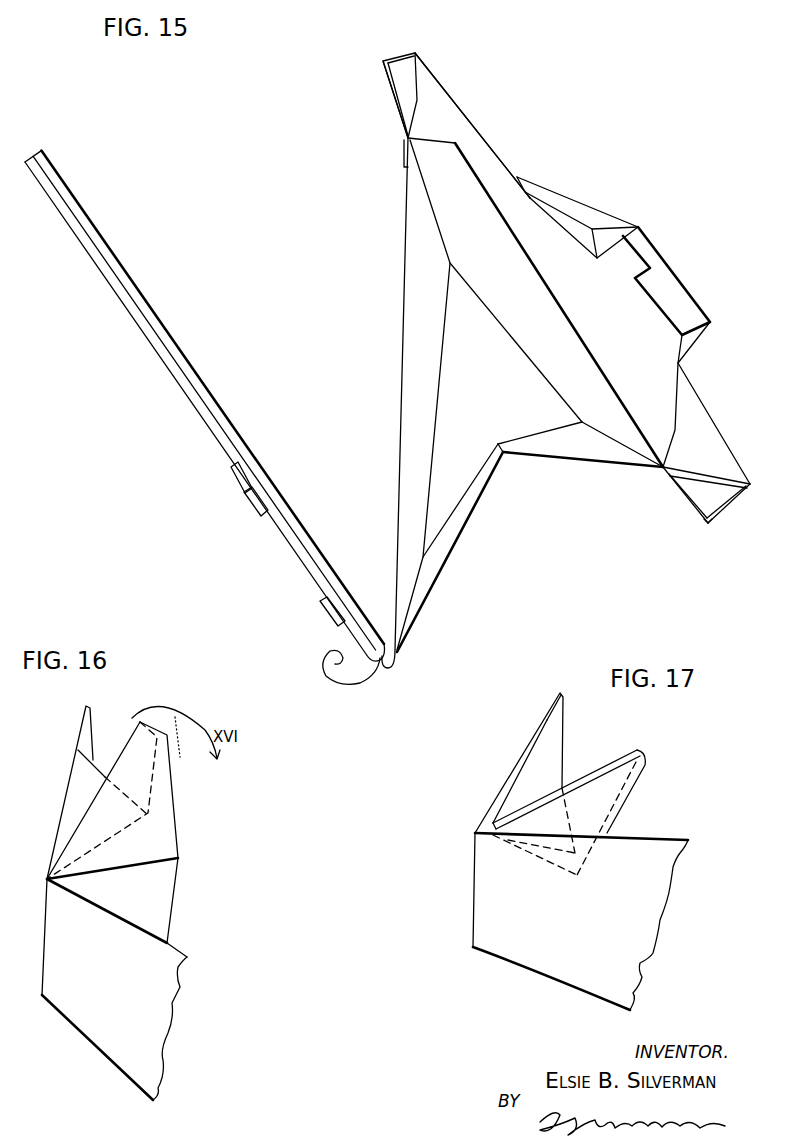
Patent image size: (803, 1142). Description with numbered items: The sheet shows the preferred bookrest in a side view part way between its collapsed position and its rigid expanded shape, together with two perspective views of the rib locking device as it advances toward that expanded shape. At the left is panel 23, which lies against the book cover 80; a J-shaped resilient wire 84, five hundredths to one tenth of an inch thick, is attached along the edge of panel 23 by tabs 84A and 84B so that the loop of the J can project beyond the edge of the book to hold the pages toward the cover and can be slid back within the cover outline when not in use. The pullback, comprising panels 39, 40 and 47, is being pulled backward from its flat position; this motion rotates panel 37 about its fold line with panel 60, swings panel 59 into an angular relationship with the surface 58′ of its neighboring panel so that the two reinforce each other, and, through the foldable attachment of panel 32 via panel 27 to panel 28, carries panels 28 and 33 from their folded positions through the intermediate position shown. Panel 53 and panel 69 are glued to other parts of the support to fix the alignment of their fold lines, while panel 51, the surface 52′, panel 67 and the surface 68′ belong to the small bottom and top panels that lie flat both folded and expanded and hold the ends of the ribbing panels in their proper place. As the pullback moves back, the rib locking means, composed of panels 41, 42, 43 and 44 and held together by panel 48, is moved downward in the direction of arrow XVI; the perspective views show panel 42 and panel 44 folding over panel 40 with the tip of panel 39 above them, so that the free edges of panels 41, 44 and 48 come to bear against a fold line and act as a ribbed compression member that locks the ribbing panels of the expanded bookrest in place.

In FIG. 15, the panel 23 is at (155, 345).
In FIG. 15, the book cover 80 is at (190, 378).
In FIG. 15, the J-shaped resilient wire 84 is at (318, 672).
In FIG. 15, the tab 84A is at (252, 506).
In FIG. 15, the tab 84B is at (326, 616).
In FIG. 15, the panel 27 is at (418, 403).
In FIG. 15, the panel 28 is at (467, 507).
In FIG. 15, the panel 32 is at (616, 426).
In FIG. 15, the panel 33 is at (580, 444).
In FIG. 15, the panel 37 is at (556, 305).
In FIG. 15, the panel 39 is at (659, 390).
In FIG. 16, the panel 39 is at (78, 722).
In FIG. 17, the panel 39 is at (557, 704).
In FIG. 16, the panel 40 is at (114, 989).
In FIG. 17, the panel 40 is at (580, 921).
In FIG. 15, the panel 41 is at (592, 228).
In FIG. 15, the panel 42 is at (607, 243).
In FIG. 16, the panel 42 is at (93, 800).
In FIG. 17, the panel 42 is at (566, 789).
In FIG. 16, the panel 43 is at (117, 907).
In FIG. 16, the panel 44 is at (112, 800).
In FIG. 17, the panel 44 is at (613, 818).
In FIG. 15, the panel 47 is at (677, 298).
In FIG. 15, the panel 48 is at (557, 200).
In FIG. 15, the panel 51 is at (698, 520).
In FIG. 15, the panel surface 52′ is at (723, 493).
In FIG. 15, the panel 53 is at (653, 472).
In FIG. 15, the panel surface 58′ is at (707, 473).
In FIG. 15, the panel 59 is at (481, 156).
In FIG. 15, the panel 60 is at (424, 127).
In FIG. 15, the panel 67 is at (395, 104).
In FIG. 15, the panel surface 68′ is at (405, 68).
In FIG. 15, the panel 69 is at (403, 164).